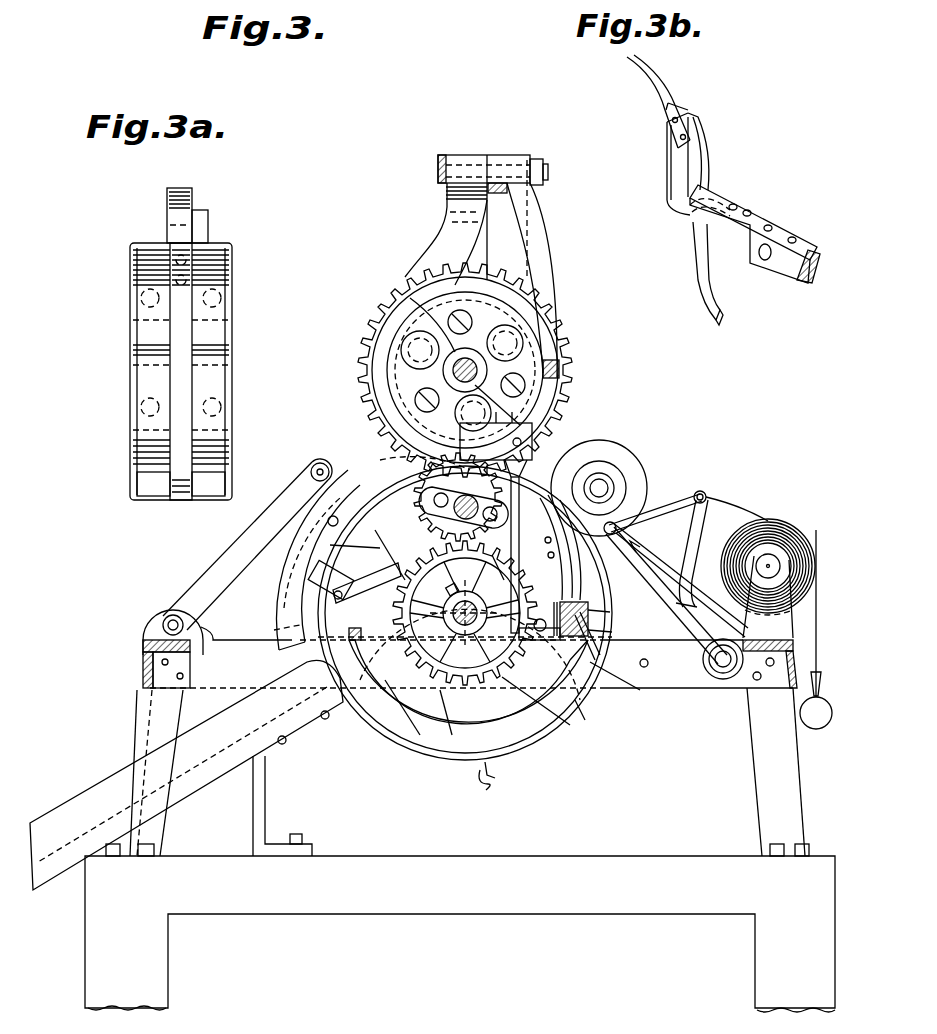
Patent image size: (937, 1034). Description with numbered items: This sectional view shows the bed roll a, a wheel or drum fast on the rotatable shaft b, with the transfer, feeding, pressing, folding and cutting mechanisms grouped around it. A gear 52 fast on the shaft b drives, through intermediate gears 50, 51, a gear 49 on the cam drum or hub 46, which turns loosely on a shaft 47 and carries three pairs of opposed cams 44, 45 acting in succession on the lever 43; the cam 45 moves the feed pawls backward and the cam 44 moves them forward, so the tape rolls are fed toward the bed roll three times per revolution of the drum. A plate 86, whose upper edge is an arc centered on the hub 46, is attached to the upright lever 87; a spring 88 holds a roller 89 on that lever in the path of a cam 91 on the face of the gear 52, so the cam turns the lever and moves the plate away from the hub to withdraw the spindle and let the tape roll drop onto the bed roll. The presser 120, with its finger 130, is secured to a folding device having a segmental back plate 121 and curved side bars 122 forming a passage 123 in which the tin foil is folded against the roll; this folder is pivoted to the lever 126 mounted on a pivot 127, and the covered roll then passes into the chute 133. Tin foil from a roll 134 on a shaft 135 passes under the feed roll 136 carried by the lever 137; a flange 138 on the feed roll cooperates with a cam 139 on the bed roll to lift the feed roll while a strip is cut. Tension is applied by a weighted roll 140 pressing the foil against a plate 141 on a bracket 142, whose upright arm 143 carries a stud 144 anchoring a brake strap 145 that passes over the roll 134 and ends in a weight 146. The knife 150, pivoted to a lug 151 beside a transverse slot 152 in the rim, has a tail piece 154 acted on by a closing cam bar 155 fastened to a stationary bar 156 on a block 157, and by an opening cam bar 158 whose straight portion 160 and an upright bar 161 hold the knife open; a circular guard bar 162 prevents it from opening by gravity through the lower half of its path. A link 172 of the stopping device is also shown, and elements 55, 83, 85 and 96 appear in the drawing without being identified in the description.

In FIG. 3, the lever 43 is at (550, 263).
In FIG. 3, the cam 44 is at (402, 292).
In FIG. 3, the cam 45 is at (520, 330).
In FIG. 3, the drum or hub 46 is at (400, 366).
In FIG. 3, the shaft 47 is at (458, 356).
In FIG. 3, the gear 49 is at (370, 330).
In FIG. 3, the intermediate gear 50 is at (425, 482).
In FIG. 3, the intermediate gear 51 is at (438, 522).
In FIG. 3, the gear 52 is at (402, 580).
In FIG. 3, the standard 55 is at (459, 220).
In FIG. 3, the hub 83 is at (408, 338).
In FIG. 3, the arm 85 is at (497, 393).
In FIG. 3, the plate 86 is at (532, 400).
In FIG. 3, the upright lever 87 is at (520, 478).
In FIG. 3, the spring 88 is at (540, 640).
In FIG. 3, the roller 89 is at (460, 576).
In FIG. 3, the cam 91 is at (505, 678).
In FIG. 3, the pawl 96 is at (491, 568).
In FIG. 3A, the presser 120 is at (167, 191).
In FIG. 3, the segmental back plate 121 is at (276, 592).
In FIG. 3A, the segmental back plate 121 is at (230, 326).
In FIG. 3, the curved side bars 122 is at (280, 619).
In FIG. 3A, the curved side bars 122 is at (145, 345).
In FIG. 3A, the groove or passage 123 is at (175, 365).
In FIG. 3, the lever 126 is at (242, 537).
In FIG. 3, the pivot 127 is at (170, 618).
In FIG. 3A, the finger 130 is at (208, 214).
In FIG. 3, the chute 133 is at (210, 722).
In FIG. 3, the roll of tin foil 134 is at (745, 535).
In FIG. 3, the shaft 135 is at (768, 572).
In FIG. 3, the feed roll 136 is at (615, 480).
In FIG. 3, the lever 137 is at (672, 611).
In FIG. 3, the flange 138 is at (628, 452).
In FIG. 3, the cam 139 is at (392, 582).
In FIG. 3, the weight roll 140 is at (630, 510).
In FIG. 3, the plate 141 is at (616, 555).
In FIG. 3, the bracket 142 is at (660, 580).
In FIG. 3, the upright arm 143 is at (688, 545).
In FIG. 3, the stud 144 is at (704, 492).
In FIG. 3, the brake strap 145 is at (735, 502).
In FIG. 3, the weight 146 is at (816, 729).
In FIG. 3, the knife 150 is at (330, 527).
In FIG. 3, the lug 151 is at (596, 708).
In FIG. 3, the transverse slot 152 is at (340, 560).
In FIG. 3, the tail piece 154 is at (322, 584).
In FIG. 3, the knife closing cam 155 is at (550, 547).
In FIG. 3B, the knife closing cam 155 is at (648, 80).
In FIG. 3, the stationary bar 156 is at (562, 550).
In FIG. 3B, the stationary bar 156 is at (667, 170).
In FIG. 3, the block 157 is at (590, 618).
In FIG. 3B, the block 157 is at (778, 264).
In FIG. 3B, the knife opening cam 158 is at (704, 300).
In FIG. 3, the straight portion 160 is at (560, 650).
In FIG. 3B, the straight portion 160 is at (696, 251).
In FIG. 3, the upright bar 161 is at (562, 608).
In FIG. 3B, the upright bar 161 is at (704, 152).
In FIG. 3, the circular guard bar 162 is at (518, 720).
In FIG. 3, the link 172 is at (437, 166).
In FIG. 3, the bed roll a is at (485, 781).
In FIG. 3, the rotatable shaft b is at (445, 612).